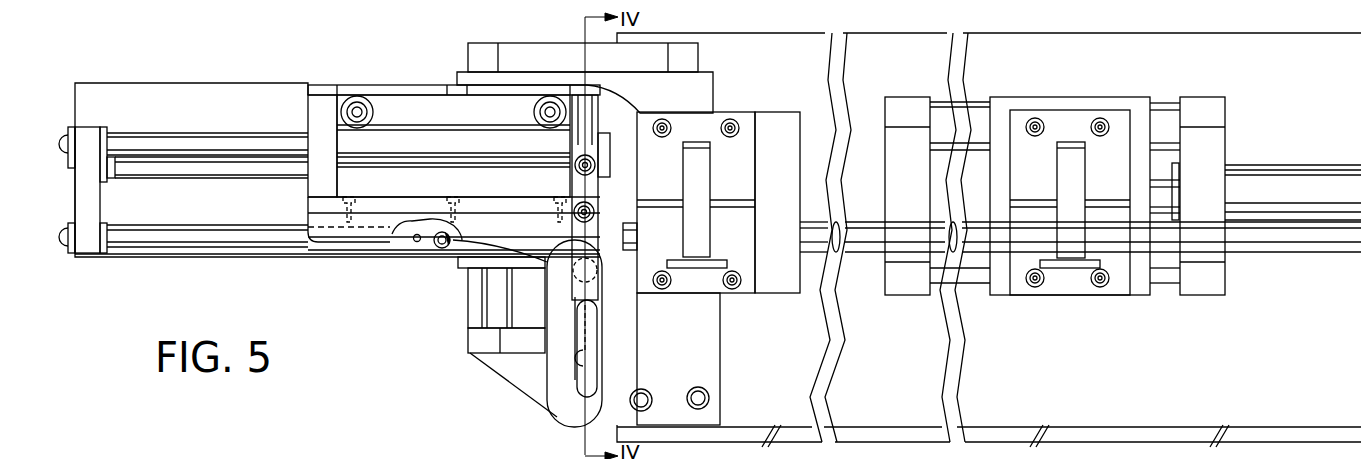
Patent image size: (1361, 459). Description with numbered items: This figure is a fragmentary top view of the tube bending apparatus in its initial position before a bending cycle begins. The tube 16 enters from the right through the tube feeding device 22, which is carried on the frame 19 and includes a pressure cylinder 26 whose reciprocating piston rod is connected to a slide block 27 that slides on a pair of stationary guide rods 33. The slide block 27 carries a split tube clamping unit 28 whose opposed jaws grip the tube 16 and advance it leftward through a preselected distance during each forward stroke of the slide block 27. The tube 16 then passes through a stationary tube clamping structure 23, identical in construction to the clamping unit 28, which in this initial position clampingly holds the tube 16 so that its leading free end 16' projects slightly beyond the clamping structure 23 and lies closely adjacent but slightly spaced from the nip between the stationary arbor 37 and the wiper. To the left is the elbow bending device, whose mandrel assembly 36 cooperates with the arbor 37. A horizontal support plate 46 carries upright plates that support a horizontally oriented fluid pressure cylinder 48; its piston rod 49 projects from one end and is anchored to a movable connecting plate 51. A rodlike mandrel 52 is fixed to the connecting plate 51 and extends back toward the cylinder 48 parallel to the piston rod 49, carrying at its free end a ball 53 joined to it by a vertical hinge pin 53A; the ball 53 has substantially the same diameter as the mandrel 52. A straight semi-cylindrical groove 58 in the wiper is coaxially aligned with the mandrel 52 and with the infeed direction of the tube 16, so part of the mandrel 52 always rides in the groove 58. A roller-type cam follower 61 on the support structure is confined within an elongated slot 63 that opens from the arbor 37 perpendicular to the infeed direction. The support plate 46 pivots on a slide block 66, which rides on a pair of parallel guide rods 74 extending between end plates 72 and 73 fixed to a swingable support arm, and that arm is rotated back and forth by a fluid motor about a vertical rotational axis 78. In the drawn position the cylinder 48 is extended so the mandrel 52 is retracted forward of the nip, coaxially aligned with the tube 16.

The tube 16 is at (1069, 278).
The leading free end of the tube 16' is at (651, 233).
The frame 19 is at (989, 240).
The tube feeding device 22 is at (1058, 334).
The tube clamping structure 23 is at (748, 185).
The pressure cylinder 26 is at (1277, 190).
The slide block 27 is at (1072, 103).
The split tube clamping unit 28 is at (1106, 178).
The stationary guide rods 33 is at (1163, 118).
The mandrel assembly 36 is at (253, 66).
The stationary arbor 37 is at (565, 395).
The support plate 46 is at (140, 92).
The fluid pressure cylinder 48 is at (407, 140).
The piston rod 49 is at (205, 140).
The connecting plate 51 is at (88, 235).
The mandrel 52 is at (243, 243).
The ball 53 is at (438, 246).
The vertical hinge pin 53A is at (417, 234).
The groove 58 is at (343, 240).
The cam follower 61 is at (600, 285).
The slot 63 is at (587, 353).
The slide block 66 is at (700, 87).
The end plate 72 is at (527, 57).
The end plate 73 is at (508, 345).
The guide rods 74 is at (490, 312).
The vertical rotational axis 78 is at (585, 325).